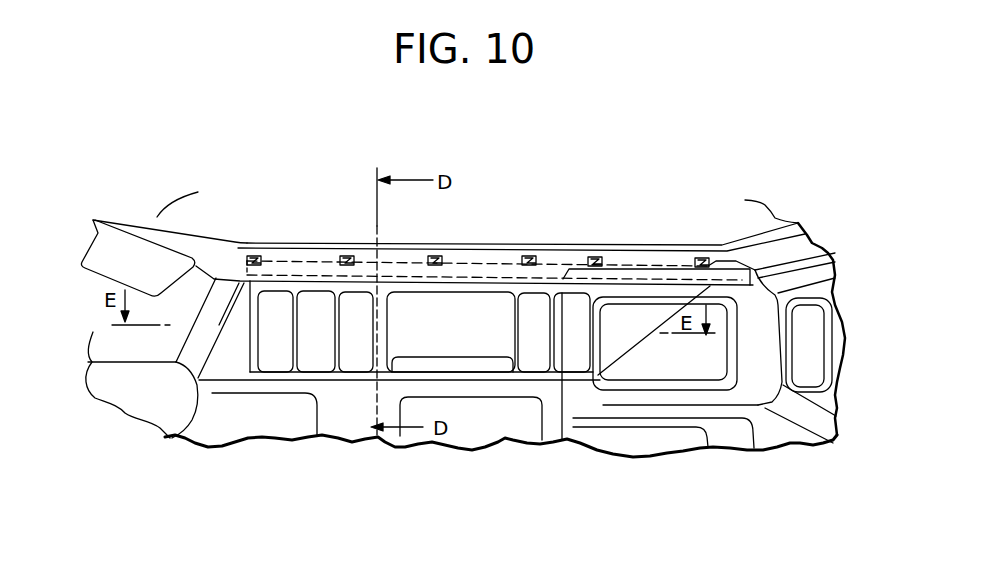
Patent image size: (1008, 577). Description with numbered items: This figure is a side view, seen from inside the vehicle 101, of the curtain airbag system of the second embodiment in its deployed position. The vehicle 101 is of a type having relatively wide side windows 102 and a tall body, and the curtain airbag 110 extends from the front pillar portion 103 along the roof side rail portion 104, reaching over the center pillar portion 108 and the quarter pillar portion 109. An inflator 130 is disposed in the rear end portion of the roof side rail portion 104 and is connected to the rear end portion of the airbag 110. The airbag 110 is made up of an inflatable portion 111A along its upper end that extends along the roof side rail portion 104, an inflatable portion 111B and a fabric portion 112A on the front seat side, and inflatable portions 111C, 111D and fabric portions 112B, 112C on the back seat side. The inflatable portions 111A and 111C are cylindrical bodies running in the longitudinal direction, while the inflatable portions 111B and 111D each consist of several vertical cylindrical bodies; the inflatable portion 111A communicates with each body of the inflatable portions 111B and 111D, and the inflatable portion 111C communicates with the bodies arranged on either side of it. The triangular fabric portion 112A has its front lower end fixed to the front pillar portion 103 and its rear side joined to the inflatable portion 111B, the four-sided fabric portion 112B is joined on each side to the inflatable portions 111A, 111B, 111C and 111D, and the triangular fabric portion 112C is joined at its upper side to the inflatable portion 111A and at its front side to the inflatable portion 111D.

The vehicle 101 is at (210, 224).
The side window 102 is at (282, 302).
The front pillar portion 103 is at (208, 304).
The roof side rail portion 104 is at (478, 257).
The center pillar portion 108 is at (360, 315).
The quarter pillar portion 109 is at (562, 312).
The curtain airbag 110 is at (490, 308).
The inflatable portion 111A is at (613, 286).
The inflatable portion 111B is at (310, 346).
The inflatable portion 111C is at (465, 363).
The inflatable portion 111D is at (534, 350).
The fabric portion 112A is at (227, 357).
The fabric portion 112B is at (493, 348).
The fabric portion 112C is at (642, 320).
The inflator 130 is at (726, 258).